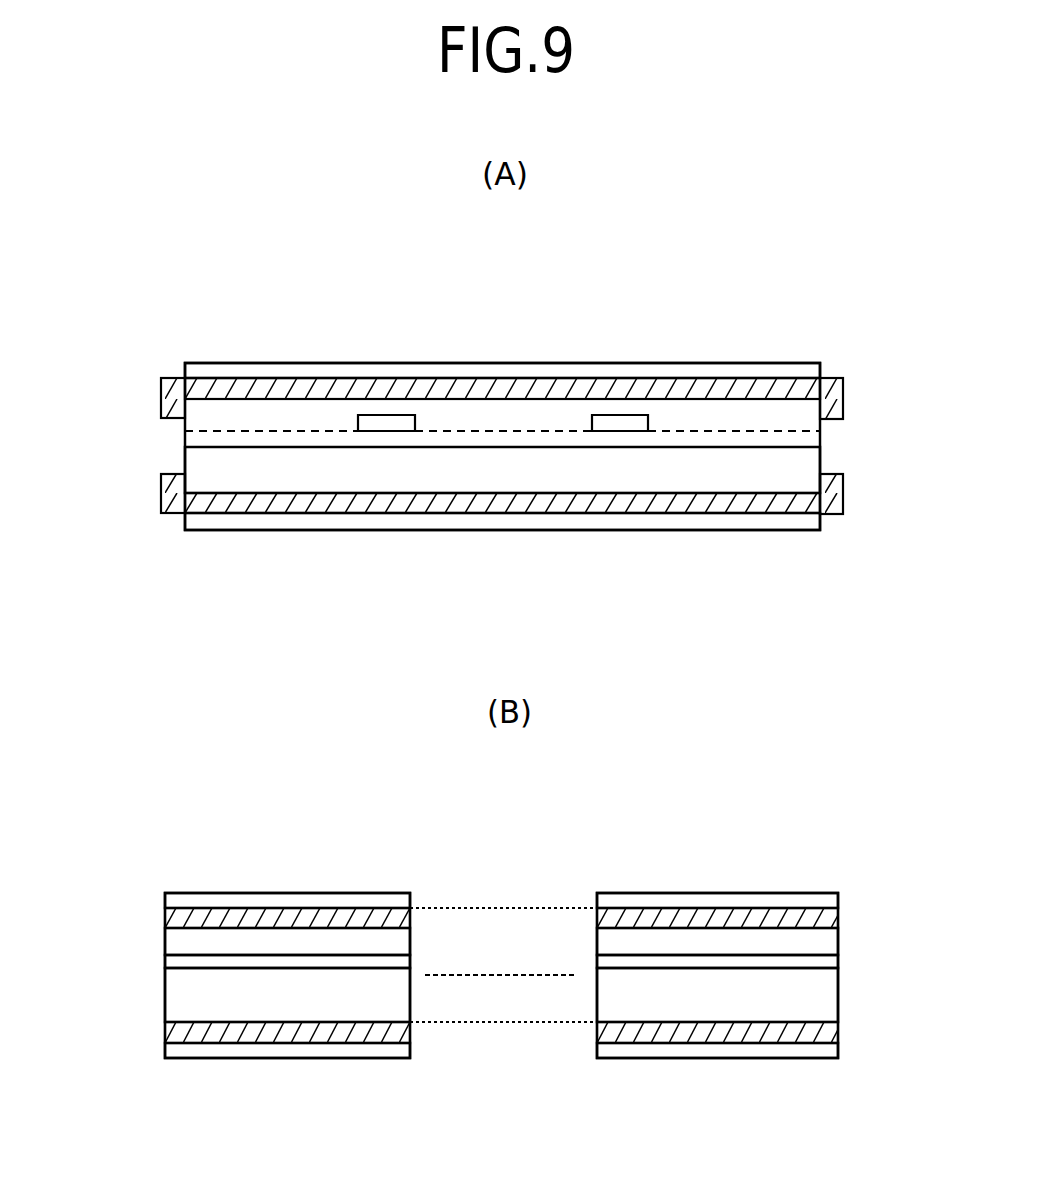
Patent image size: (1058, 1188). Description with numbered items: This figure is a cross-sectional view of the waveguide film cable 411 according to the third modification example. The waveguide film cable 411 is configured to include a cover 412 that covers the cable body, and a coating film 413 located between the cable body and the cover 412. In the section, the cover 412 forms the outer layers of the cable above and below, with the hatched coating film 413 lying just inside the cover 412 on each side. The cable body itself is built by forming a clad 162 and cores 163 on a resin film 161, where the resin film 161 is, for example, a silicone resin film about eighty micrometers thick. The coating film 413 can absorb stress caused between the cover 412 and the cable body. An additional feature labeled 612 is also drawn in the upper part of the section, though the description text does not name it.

The waveguide film cable 411 is at (247, 274).
The cover 412 is at (425, 363).
The coating film 413 is at (163, 412).
The resin film 161 is at (673, 473).
The clad 162 is at (307, 942).
The cores 163 is at (365, 953).
The spacer and dashed interface line 612 is at (792, 417).